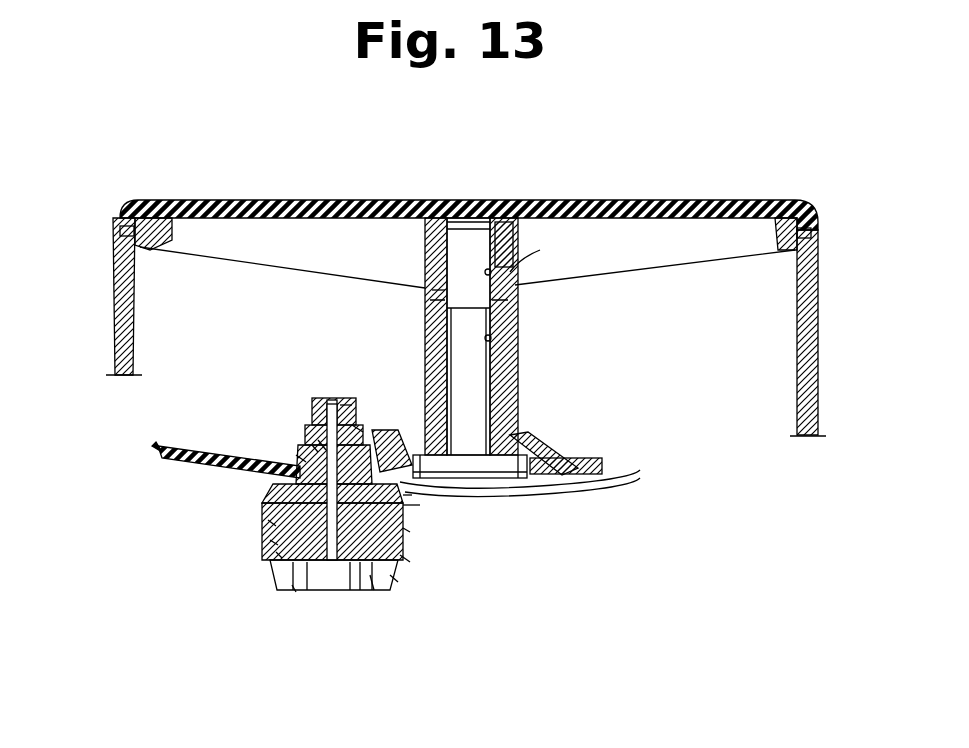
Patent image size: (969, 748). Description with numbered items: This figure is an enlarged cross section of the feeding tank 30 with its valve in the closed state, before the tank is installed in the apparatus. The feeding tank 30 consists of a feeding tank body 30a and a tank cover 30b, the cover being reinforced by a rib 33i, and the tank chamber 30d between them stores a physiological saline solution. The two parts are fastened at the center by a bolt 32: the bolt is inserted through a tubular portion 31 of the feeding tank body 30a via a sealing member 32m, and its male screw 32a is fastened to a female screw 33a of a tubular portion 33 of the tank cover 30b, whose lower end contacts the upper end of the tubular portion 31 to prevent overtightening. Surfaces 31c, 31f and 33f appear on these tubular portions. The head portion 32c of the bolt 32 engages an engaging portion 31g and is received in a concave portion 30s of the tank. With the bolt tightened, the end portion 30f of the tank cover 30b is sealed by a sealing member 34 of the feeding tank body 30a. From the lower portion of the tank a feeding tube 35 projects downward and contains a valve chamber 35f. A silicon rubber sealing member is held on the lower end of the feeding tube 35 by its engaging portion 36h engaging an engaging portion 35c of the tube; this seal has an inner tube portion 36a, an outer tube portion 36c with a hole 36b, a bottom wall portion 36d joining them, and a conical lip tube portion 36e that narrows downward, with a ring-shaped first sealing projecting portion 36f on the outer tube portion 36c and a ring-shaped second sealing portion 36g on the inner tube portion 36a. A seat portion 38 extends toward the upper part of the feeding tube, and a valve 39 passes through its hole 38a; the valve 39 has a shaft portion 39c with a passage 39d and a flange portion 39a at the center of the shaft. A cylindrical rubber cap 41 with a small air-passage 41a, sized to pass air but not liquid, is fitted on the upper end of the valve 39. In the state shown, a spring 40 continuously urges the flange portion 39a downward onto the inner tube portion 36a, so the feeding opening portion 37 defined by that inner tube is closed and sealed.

The feeding tank 30 is at (178, 456).
The feeding tank body 30a is at (156, 446).
The tank cover 30b is at (340, 200).
The tank chamber 30d is at (190, 318).
The end portion of the tank cover 30f is at (135, 205).
The concave portion 30s is at (560, 490).
The tubular portion of the feeding tank body 31 is at (477, 388).
The hook 31c is at (490, 340).
The cylinder wall flange 31f is at (428, 288).
The engaging portion 31g is at (548, 465).
The bolt 32 is at (510, 400).
The male screw 32a is at (500, 232).
The head portion of the bolt 32c is at (510, 480).
The sealing member 32m is at (540, 445).
The tubular portion of the tank cover 33 is at (433, 228).
The female screw 33a is at (510, 272).
The ring flange 33f is at (515, 292).
The rib 33i is at (173, 250).
The sealing member 34 is at (120, 230).
The feeding tube 35 is at (300, 478).
The engaging portion of the feeding tube 35c is at (295, 590).
The valve chamber 35f is at (300, 455).
The inner tube portion 36a is at (310, 590).
The hole 36b is at (420, 505).
The outer tube portion 36c is at (410, 560).
The bottom wall portion 36d is at (372, 590).
The lip tube portion 36e is at (395, 580).
The first sealing projecting portion 36f is at (270, 520).
The second sealing portion 36g is at (410, 495).
The engaging portion of the sealing member 36h is at (280, 555).
The feeding opening portion 37 is at (331, 590).
The seat portion 38 is at (322, 400).
The hole of the seat portion 38a is at (352, 425).
The valve 39 is at (340, 398).
The flange portion 39a is at (275, 540).
The shaft portion 39c is at (330, 440).
The passage 39d is at (318, 445).
The spring 40 is at (372, 450).
The cap 41 is at (350, 405).
The air-passage 41a is at (333, 400).